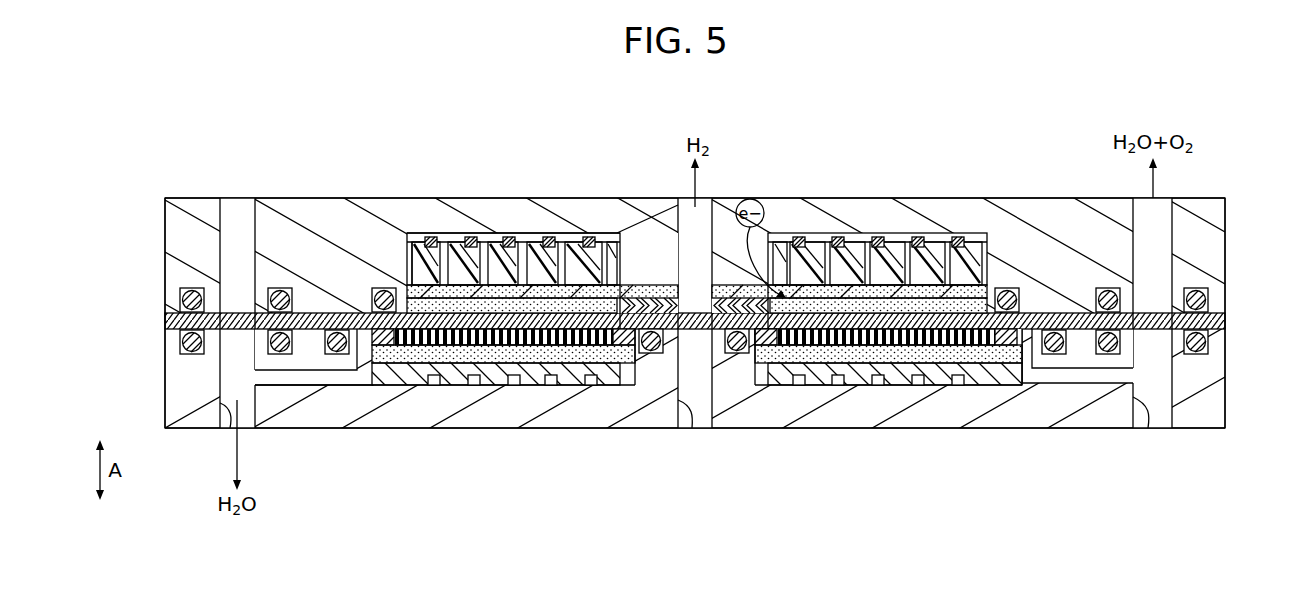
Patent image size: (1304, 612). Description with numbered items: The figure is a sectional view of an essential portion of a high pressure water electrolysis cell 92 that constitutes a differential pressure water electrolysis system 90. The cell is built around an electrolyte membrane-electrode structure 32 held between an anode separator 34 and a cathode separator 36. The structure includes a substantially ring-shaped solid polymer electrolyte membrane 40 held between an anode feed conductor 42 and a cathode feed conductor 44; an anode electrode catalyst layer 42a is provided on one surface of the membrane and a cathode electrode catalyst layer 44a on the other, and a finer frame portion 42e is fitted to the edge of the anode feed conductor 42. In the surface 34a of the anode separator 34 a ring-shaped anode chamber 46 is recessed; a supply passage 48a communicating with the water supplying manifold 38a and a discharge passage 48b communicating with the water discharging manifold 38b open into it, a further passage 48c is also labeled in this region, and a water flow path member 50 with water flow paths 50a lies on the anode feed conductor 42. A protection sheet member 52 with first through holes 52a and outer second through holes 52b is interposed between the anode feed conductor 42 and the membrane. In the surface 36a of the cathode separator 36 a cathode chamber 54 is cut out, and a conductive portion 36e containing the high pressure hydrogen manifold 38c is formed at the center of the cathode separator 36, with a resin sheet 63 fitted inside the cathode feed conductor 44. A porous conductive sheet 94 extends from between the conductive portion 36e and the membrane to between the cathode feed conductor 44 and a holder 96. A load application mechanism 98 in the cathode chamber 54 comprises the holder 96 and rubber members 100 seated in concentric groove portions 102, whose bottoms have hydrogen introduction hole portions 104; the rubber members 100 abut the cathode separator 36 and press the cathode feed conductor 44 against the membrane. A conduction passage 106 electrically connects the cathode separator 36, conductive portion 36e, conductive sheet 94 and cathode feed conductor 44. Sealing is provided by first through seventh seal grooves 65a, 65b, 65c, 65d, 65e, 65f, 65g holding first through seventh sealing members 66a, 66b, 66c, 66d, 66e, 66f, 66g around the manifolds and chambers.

The differential pressure water electrolysis system 90 is at (754, 88).
The high pressure water electrolysis cell 92 is at (692, 88).
The electrolyte membrane-electrode structure 32 is at (160, 321).
The anode separator 34 is at (177, 436).
The surface of the anode separator 34a is at (1062, 322).
The cathode separator 36 is at (168, 191).
The surface of the cathode separator 36a is at (1070, 398).
The conductive portion 36e is at (727, 395).
The water supplying manifold 38a is at (230, 418).
The water discharging manifold 38b is at (1152, 428).
The high pressure hydrogen manifold 38c is at (693, 428).
The solid polymer electrolyte membrane 40 is at (318, 398).
The anode feed conductor 42 is at (496, 346).
The anode electrode catalyst layer 42a is at (518, 347).
The frame portion 42e is at (405, 377).
The cathode feed conductor 44 is at (590, 238).
The cathode electrode catalyst layer 44a is at (498, 285).
The anode chamber 46 is at (596, 380).
The supply passage 48a is at (292, 402).
The discharge passage 48b is at (1108, 350).
The diffusion layer 48c is at (650, 245).
The water flow path member 50 is at (468, 377).
The water flow paths 50a is at (437, 382).
The protection sheet member 52 is at (625, 347).
The first through holes 52a is at (582, 347).
The second through holes 52b is at (383, 347).
The cathode chamber 54 is at (872, 240).
The resin sheet 63 is at (663, 275).
The first seal groove 65a is at (192, 340).
The second seal groove 65b is at (1212, 337).
The third seal groove 65c is at (650, 355).
The fourth seal groove 65d is at (1052, 332).
The fifth seal groove 65e is at (190, 302).
The sixth seal groove 65f is at (1212, 307).
The seventh seal groove 65g is at (380, 292).
The first sealing member 66a is at (194, 350).
The second sealing member 66b is at (1212, 350).
The third sealing member 66c is at (647, 236).
The fourth sealing member 66d is at (1052, 352).
The fifth sealing member 66e is at (196, 300).
The sixth sealing member 66f is at (1212, 298).
The seventh sealing member 66g is at (372, 298).
The conductive sheet 94 is at (930, 283).
The holder 96 is at (416, 240).
The load application mechanism 98 is at (535, 226).
The rubber members 100 is at (431, 237).
The groove portions 102 is at (575, 292).
The hydrogen introduction hole portions 104 is at (490, 280).
The conduction passage 106 is at (742, 255).